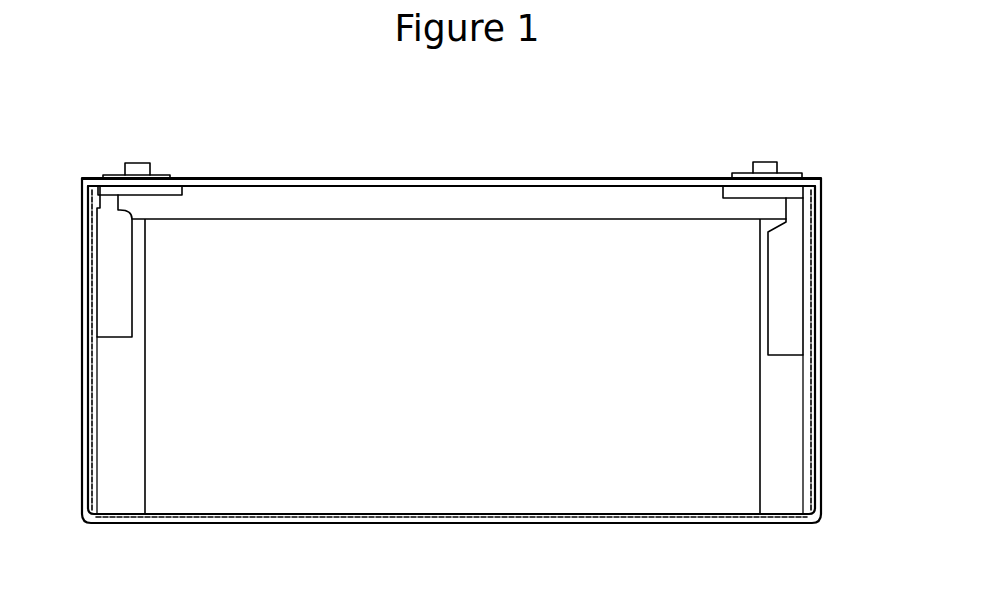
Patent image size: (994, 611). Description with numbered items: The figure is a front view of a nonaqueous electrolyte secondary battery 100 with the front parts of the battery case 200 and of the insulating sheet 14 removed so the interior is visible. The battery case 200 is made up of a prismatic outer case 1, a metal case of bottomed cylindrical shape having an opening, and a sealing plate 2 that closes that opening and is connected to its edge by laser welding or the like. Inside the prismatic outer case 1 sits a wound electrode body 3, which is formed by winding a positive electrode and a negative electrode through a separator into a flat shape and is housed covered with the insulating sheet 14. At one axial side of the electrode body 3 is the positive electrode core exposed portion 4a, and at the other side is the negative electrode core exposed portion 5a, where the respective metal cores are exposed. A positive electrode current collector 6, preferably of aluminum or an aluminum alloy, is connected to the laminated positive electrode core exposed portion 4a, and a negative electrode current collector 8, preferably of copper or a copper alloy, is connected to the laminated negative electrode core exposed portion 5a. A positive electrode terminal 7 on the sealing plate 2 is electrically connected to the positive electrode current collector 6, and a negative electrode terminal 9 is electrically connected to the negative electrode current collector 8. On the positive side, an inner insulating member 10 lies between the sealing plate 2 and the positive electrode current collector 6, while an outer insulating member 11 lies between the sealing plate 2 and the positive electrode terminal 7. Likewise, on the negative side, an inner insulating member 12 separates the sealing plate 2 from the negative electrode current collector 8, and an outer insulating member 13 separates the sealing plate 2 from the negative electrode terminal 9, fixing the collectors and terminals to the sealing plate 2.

The nonaqueous electrolyte secondary battery 100 is at (60, 88).
The battery case 200 is at (826, 378).
The prismatic outer case 1 is at (822, 417).
The sealing plate 2 is at (322, 182).
The wound electrode body 3 is at (461, 503).
The positive electrode core exposed portion 4a is at (792, 502).
The negative electrode core exposed portion 5a is at (109, 502).
The positive electrode current collector 6 is at (790, 265).
The positive electrode terminal 7 is at (766, 161).
The negative electrode current collector 8 is at (112, 287).
The negative electrode terminal 9 is at (137, 161).
The inner insulating member 10 is at (780, 188).
The outer insulating member 11 is at (736, 172).
The inner insulating member 12 is at (180, 194).
The outer insulating member 13 is at (167, 173).
The insulating sheet 14 is at (82, 470).